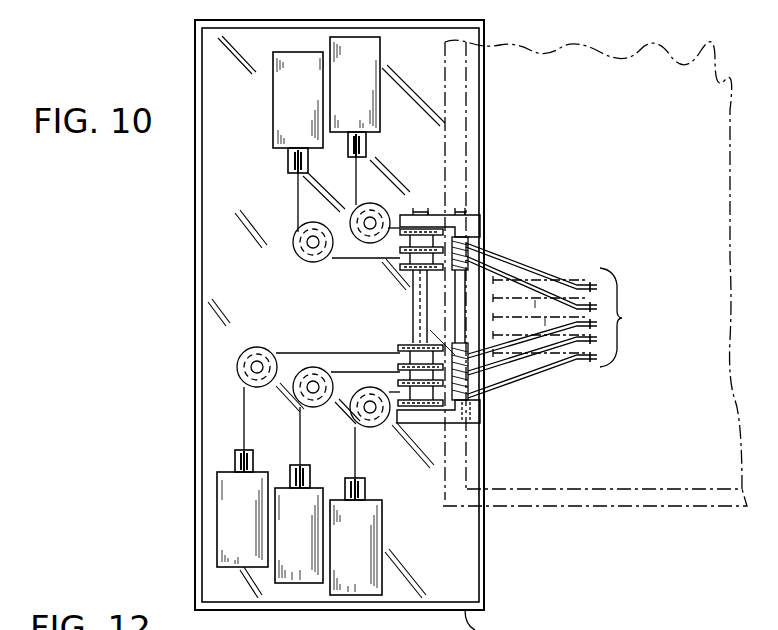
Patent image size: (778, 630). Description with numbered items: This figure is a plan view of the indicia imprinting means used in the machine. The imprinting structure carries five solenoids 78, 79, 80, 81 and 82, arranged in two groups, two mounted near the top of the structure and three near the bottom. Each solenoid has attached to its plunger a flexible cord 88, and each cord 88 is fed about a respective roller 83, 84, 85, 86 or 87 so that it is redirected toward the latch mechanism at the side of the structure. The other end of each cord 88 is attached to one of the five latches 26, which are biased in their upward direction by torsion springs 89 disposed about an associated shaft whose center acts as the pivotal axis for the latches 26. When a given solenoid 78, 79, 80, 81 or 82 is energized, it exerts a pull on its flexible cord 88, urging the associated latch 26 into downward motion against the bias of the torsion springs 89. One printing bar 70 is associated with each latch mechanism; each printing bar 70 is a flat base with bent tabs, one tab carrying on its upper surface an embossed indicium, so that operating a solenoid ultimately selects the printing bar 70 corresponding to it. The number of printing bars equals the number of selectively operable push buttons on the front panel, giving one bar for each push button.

The latches 26 is at (622, 318).
The printing bar 70 is at (550, 335).
The solenoid 78 is at (342, 558).
The solenoid 79 is at (287, 548).
The solenoid 80 is at (229, 528).
The solenoid 81 is at (300, 115).
The solenoid 82 is at (362, 93).
The roller 83 is at (378, 206).
The roller 84 is at (310, 240).
The roller 85 is at (238, 366).
The roller 86 is at (300, 366).
The roller 87 is at (373, 428).
The flexible cord 88 is at (298, 210).
The torsion springs 89 is at (490, 262).